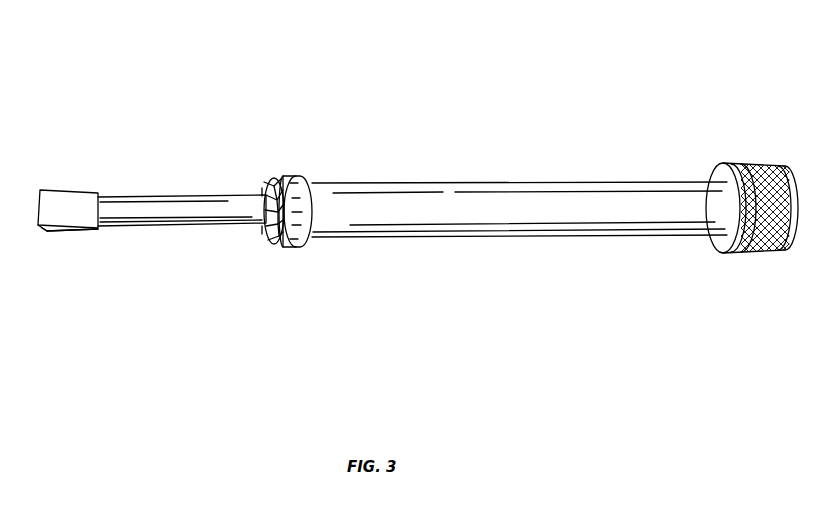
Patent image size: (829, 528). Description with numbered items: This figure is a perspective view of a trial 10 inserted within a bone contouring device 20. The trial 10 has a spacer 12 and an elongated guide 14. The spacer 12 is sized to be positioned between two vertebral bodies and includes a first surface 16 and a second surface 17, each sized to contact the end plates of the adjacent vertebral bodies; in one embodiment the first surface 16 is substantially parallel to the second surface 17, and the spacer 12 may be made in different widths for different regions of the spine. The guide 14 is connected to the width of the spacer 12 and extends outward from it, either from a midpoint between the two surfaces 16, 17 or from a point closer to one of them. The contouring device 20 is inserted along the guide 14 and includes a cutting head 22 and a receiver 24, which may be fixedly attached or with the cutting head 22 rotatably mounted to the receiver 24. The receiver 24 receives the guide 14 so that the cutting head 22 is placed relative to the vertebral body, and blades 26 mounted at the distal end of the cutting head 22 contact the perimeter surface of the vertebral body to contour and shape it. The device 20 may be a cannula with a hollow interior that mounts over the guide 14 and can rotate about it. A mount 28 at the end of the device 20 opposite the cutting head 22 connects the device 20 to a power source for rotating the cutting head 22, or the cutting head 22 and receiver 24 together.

The trial 10 is at (120, 110).
The spacer 12 is at (56, 210).
The guide 14 is at (203, 218).
The first surface 16 is at (60, 190).
The second surface 17 is at (65, 228).
The contouring device 20 is at (521, 108).
The cutting head 22 is at (299, 233).
The receiver 24 is at (528, 214).
The blades 26 is at (268, 180).
The mount 28 is at (770, 252).